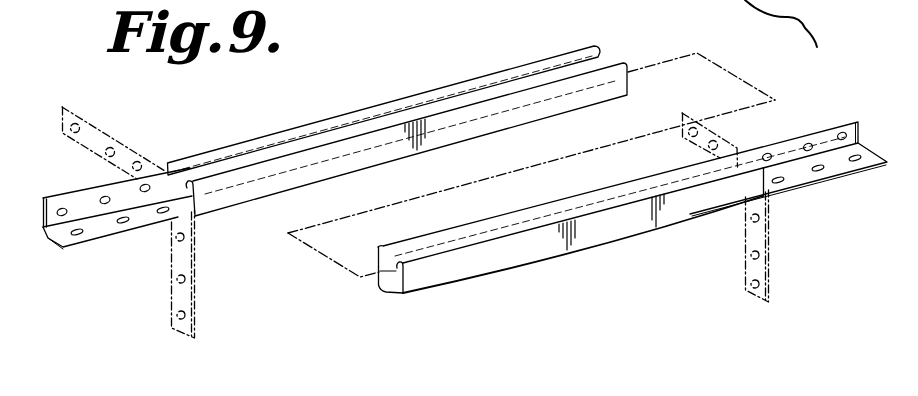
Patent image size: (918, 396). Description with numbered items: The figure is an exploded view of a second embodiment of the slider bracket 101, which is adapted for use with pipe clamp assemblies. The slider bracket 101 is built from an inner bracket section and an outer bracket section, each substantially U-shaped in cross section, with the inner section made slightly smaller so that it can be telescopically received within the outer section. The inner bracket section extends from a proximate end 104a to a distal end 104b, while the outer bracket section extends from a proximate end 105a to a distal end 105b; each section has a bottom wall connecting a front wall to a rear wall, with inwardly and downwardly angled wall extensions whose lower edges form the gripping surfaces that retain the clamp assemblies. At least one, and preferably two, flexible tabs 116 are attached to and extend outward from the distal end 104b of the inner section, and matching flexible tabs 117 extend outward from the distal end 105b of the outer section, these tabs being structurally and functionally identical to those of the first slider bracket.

The slider bracket 101 is at (280, 309).
The proximate end 104a is at (400, 283).
The distal end 104b is at (774, 188).
The proximate end 105a is at (599, 58).
The distal end 105b is at (193, 190).
The flexible tabs 116 is at (805, 173).
The flexible tabs 117 is at (100, 124).